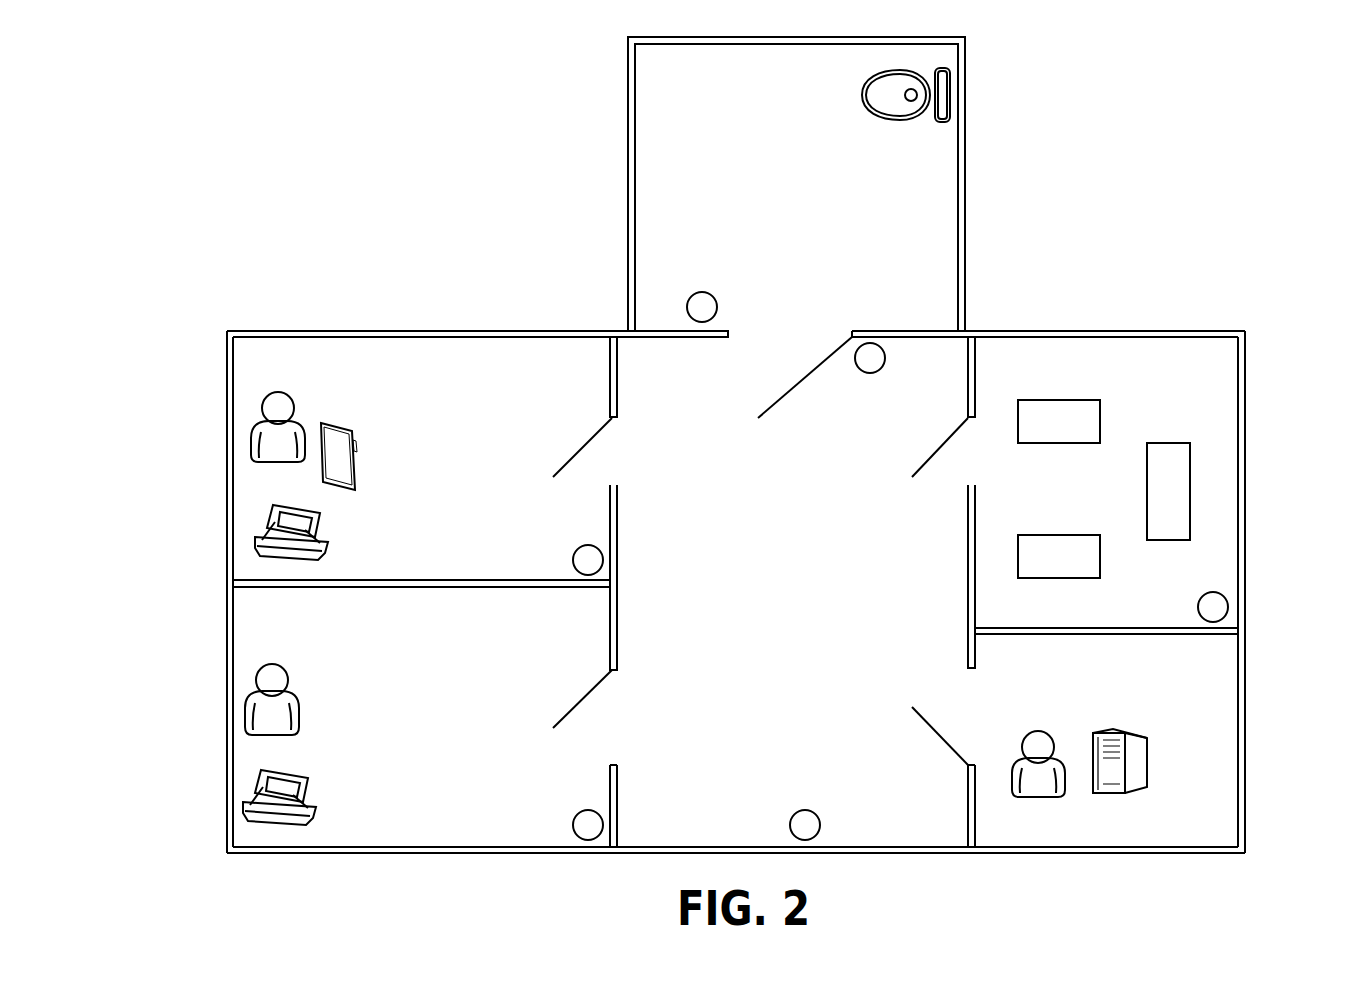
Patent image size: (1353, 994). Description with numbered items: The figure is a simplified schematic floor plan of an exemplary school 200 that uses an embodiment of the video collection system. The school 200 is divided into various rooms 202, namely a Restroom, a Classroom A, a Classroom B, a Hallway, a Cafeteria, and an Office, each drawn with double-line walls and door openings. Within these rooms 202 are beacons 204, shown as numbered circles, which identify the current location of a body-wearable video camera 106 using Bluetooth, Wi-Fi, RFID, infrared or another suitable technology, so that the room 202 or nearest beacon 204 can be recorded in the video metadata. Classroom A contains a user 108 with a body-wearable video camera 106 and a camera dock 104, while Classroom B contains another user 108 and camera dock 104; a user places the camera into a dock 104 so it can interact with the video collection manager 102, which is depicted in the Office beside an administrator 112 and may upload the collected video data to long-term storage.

The school 200 is at (345, 68).
The rooms 202 is at (672, 222).
The beacon 204 is at (565, 550).
The body-wearable video camera 106 is at (323, 413).
The user 108 is at (247, 437).
The camera dock 104 is at (250, 538).
The video collection manager 102 is at (1138, 802).
The administrator 112 is at (1047, 832).